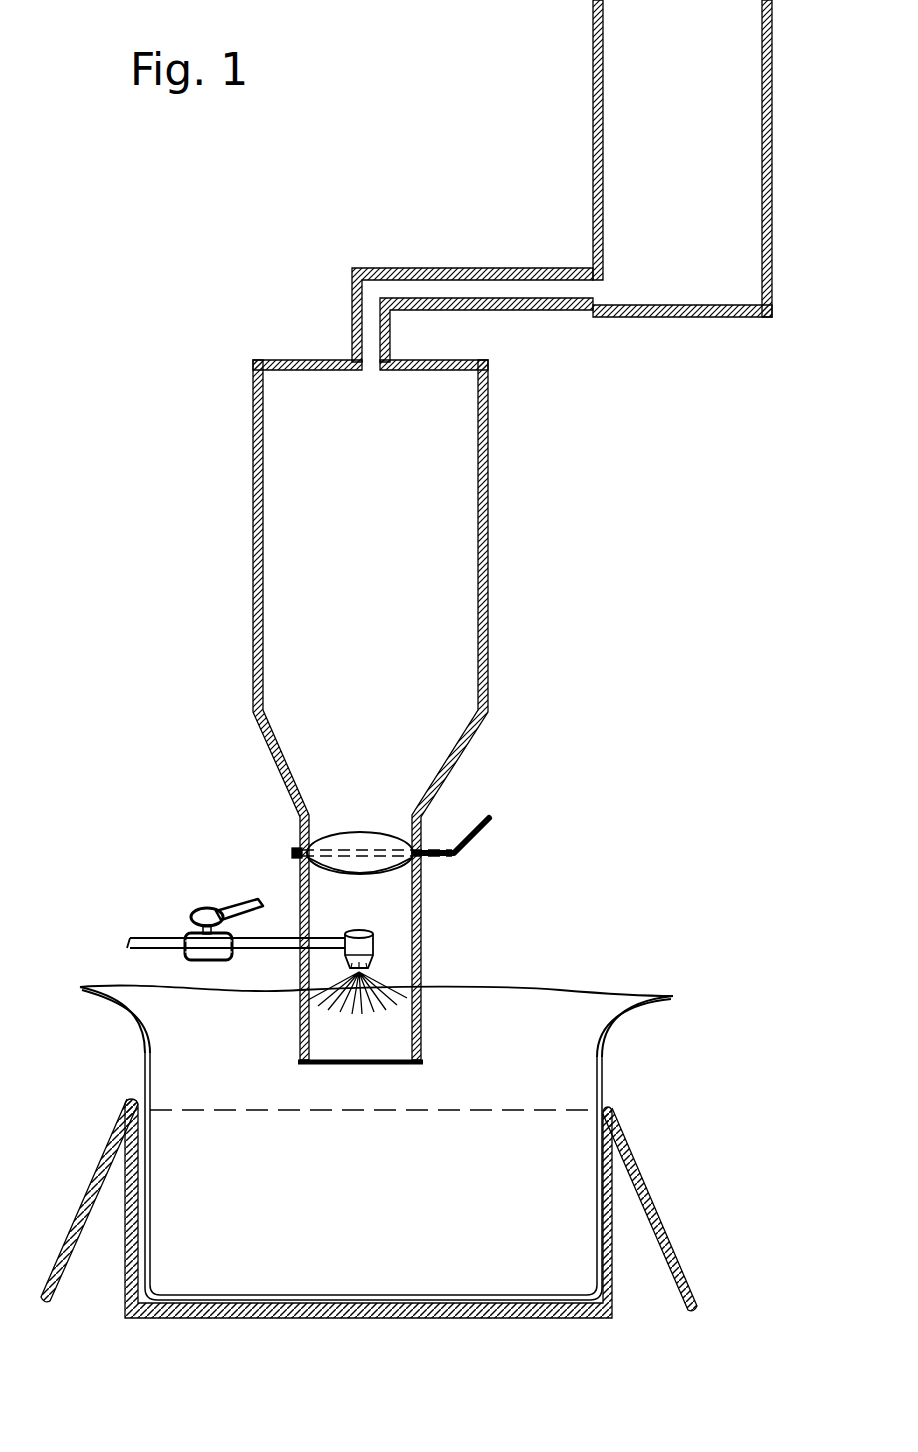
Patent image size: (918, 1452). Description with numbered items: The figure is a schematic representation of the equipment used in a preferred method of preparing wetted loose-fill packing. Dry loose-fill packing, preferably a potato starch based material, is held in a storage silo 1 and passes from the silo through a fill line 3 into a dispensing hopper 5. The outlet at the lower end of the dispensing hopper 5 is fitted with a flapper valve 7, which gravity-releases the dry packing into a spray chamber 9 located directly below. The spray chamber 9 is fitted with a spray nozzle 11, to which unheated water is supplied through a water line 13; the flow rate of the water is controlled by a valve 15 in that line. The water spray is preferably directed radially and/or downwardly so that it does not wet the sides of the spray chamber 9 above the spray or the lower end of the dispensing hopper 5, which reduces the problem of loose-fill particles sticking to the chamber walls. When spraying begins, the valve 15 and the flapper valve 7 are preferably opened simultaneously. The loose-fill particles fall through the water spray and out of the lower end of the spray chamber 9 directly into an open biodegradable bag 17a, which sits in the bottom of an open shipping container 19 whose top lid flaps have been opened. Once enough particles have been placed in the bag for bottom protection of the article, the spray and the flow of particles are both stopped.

The storage silo 1 is at (593, 133).
The fill line 3 is at (500, 268).
The dispensing hopper 5 is at (253, 532).
The flapper valve 7 is at (350, 842).
The spray chamber 9 is at (375, 1035).
The spray nozzle 11 is at (374, 945).
The water line 13 is at (278, 938).
The valve 15 is at (190, 910).
The open biodegradable bag 17a is at (617, 1037).
The open shipping container 19 is at (660, 1200).